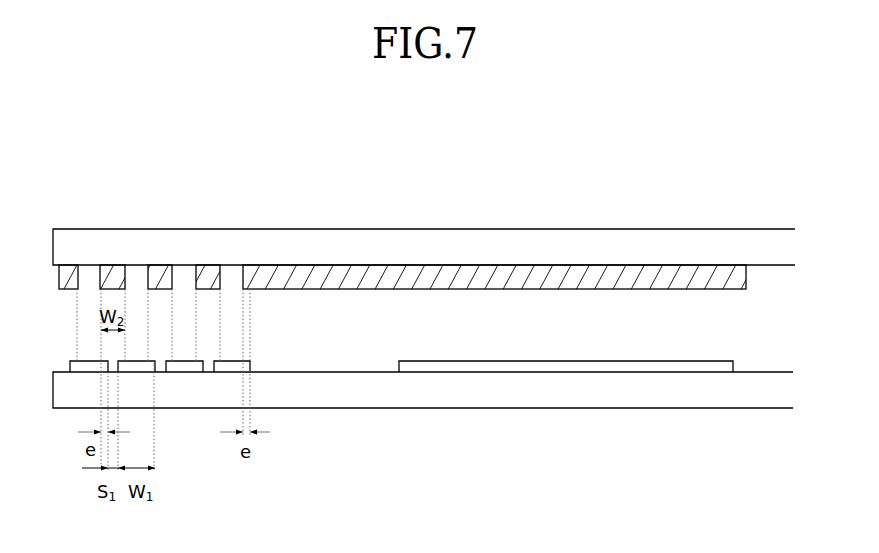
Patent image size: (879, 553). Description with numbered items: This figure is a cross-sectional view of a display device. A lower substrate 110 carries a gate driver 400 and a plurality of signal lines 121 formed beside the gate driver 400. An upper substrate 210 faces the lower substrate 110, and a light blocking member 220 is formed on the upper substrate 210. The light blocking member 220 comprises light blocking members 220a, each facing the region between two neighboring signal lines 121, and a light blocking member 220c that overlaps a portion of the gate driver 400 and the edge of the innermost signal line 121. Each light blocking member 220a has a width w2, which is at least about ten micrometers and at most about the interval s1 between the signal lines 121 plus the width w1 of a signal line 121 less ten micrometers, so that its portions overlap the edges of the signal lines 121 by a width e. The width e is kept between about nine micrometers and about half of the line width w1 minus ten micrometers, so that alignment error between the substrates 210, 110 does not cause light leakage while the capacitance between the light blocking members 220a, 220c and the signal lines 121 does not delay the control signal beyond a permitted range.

The upper substrate 210 is at (638, 248).
The light blocking member 220 is at (400, 214).
The light blocking member 220a is at (132, 272).
The light blocking member 220c is at (494, 235).
The lower substrate 110 is at (408, 388).
The signal line 121 is at (184, 367).
The gate driver 400 is at (546, 367).